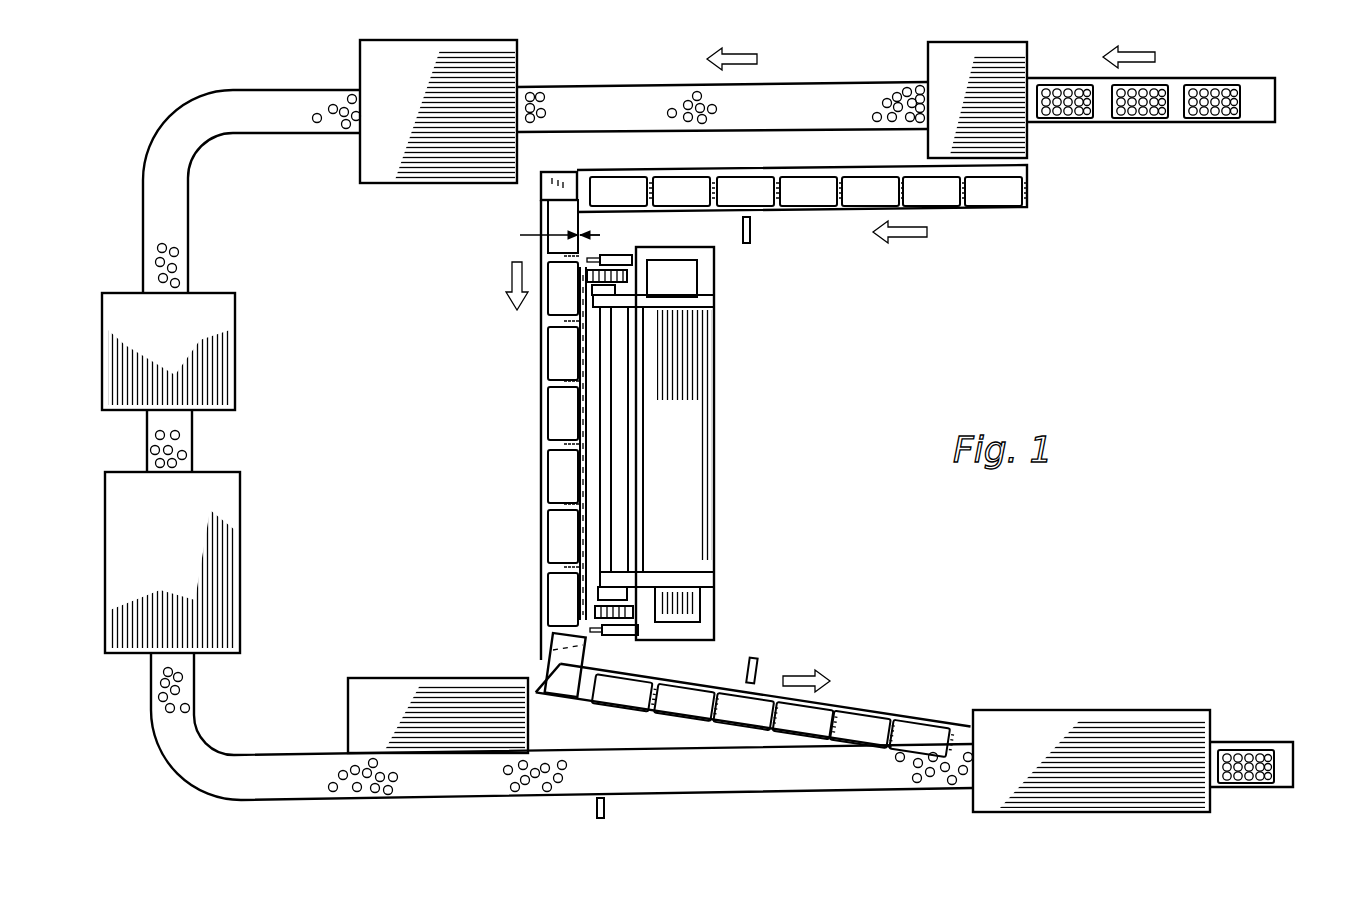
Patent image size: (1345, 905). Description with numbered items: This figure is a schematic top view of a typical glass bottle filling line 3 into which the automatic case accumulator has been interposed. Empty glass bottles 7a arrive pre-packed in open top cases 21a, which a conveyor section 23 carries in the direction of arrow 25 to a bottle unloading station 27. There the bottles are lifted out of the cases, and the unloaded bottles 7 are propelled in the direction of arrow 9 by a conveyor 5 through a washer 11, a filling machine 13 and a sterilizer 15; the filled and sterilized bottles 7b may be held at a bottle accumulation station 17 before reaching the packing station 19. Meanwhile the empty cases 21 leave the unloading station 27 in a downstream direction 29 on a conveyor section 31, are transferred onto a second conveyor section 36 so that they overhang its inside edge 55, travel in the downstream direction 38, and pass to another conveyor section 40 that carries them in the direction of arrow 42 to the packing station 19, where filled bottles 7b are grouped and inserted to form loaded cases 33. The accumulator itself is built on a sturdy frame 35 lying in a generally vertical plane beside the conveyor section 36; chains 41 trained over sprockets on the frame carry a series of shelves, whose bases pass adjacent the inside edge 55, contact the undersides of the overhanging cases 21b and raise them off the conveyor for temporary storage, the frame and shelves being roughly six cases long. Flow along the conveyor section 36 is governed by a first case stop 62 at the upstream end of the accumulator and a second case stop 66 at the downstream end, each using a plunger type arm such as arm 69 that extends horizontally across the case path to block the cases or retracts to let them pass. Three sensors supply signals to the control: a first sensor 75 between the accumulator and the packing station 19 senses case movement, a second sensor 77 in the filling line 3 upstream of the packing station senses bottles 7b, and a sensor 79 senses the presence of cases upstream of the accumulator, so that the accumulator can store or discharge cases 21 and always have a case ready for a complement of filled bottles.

The bottle filling line 3 is at (400, 398).
The conveyor 5 is at (800, 90).
The unloaded bottles 7 is at (536, 96).
The glass bottles 7a is at (1233, 88).
The filled and sterilized bottles 7b is at (185, 708).
The arrow 9 is at (745, 64).
The washer 11 is at (438, 111).
The filling machine 13 is at (168, 351).
The sterilizer 15 is at (172, 562).
The bottle accumulation station 17 is at (445, 690).
The packing station 19 is at (1090, 704).
The empty cases 21 is at (862, 178).
The loaded cases 21a is at (1083, 88).
The cases 21b is at (555, 397).
The conveyor section 23 is at (1035, 80).
The arrow 25 is at (1140, 54).
The bottle unloading station 27 is at (985, 58).
The downstream direction 29 is at (905, 237).
The conveyor section 31 is at (652, 172).
The loaded cases 33 is at (1243, 740).
The frame 35 is at (733, 458).
The conveyor section 36 is at (546, 207).
The downstream direction 38 is at (510, 273).
The conveyor section 40 is at (727, 692).
The chains 41 is at (628, 274).
The arrow 42 is at (805, 674).
The inside edge 55 is at (578, 176).
The first case stop 62 is at (622, 255).
The second case stop 66 is at (620, 640).
The plunger type arm 69 is at (590, 680).
The first sensor 75 is at (757, 658).
The second sensor 77 is at (606, 814).
The sensor 79 is at (753, 233).